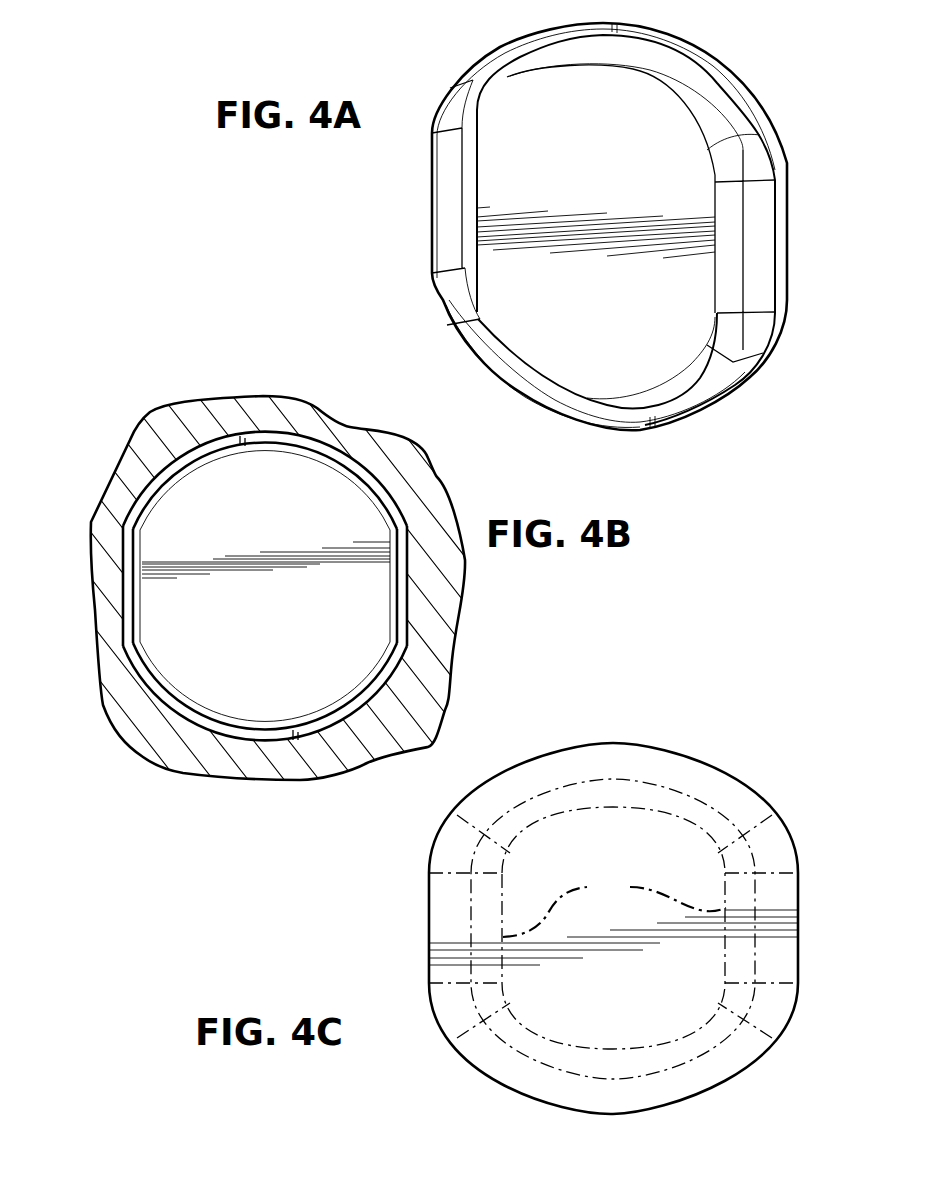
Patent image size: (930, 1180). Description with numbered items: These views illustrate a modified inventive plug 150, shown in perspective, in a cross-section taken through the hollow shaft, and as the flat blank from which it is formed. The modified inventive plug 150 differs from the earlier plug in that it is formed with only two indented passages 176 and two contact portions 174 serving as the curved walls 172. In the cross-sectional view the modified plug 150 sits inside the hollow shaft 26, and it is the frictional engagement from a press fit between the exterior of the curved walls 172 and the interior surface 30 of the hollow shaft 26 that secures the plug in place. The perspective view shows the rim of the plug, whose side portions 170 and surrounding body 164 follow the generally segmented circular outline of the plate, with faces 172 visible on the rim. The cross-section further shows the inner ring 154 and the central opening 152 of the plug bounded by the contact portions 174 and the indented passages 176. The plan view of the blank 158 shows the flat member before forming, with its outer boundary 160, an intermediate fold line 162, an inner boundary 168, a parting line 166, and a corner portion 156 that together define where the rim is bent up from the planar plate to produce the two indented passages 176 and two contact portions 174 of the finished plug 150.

In FIG. 4A, the modified inventive plug 150 is at (428, 70).
In FIG. 4B, the modified inventive plug 150 is at (101, 408).
In FIG. 4A, the seal body 164 is at (782, 213).
In FIG. 4C, the seal body 164 is at (657, 752).
In FIG. 4A, the side flat portions 170 is at (443, 193).
In FIG. 4B, the side flat portions 170 is at (130, 575).
In FIG. 4A, the curved walls 172 is at (702, 80).
In FIG. 4B, the hollow shaft 26 is at (429, 497).
In FIG. 4B, the interior surface 30 is at (415, 580).
In FIG. 4B, the inner ring 154 is at (323, 450).
In FIG. 4B, the opening 152 is at (197, 673).
In FIG. 4B, the indented passages 176 is at (120, 617).
In FIG. 4B, the contact portions 174 is at (258, 430).
In FIG. 4C, the seal element 158 is at (608, 712).
In FIG. 4C, the outer surfaces 160 is at (733, 773).
In FIG. 4C, the intermediate surface 162 is at (699, 1103).
In FIG. 4C, the parting line 166 is at (614, 906).
In FIG. 4C, the inner surface 168 is at (595, 808).
In FIG. 4C, the corner portion 156 is at (510, 1050).